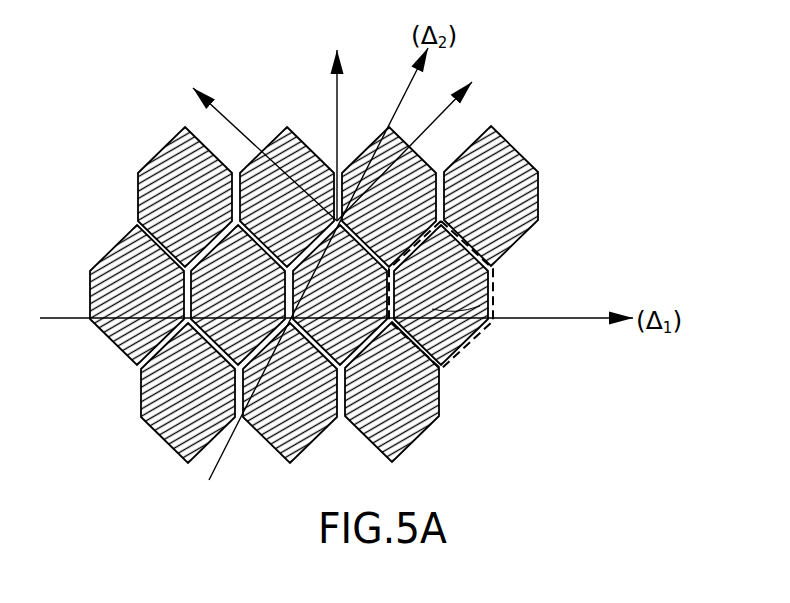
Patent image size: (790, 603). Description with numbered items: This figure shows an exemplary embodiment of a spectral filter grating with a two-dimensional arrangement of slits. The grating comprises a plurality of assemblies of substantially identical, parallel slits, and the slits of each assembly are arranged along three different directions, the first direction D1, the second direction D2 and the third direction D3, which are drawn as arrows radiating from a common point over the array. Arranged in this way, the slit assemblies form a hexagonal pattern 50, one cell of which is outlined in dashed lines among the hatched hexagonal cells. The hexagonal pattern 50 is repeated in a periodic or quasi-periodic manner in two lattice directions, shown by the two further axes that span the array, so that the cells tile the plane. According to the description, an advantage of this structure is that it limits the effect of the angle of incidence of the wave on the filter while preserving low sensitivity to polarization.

The hexagonal pattern 50 is at (494, 303).
The first direction D1 is at (336, 121).
The second direction D2 is at (420, 135).
The third direction D3 is at (248, 143).